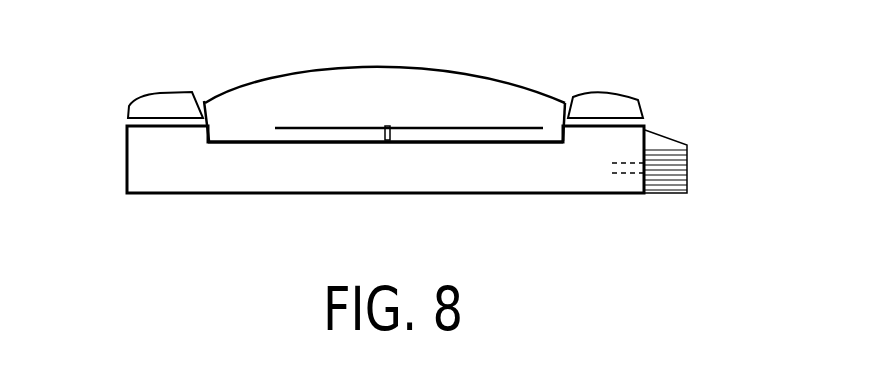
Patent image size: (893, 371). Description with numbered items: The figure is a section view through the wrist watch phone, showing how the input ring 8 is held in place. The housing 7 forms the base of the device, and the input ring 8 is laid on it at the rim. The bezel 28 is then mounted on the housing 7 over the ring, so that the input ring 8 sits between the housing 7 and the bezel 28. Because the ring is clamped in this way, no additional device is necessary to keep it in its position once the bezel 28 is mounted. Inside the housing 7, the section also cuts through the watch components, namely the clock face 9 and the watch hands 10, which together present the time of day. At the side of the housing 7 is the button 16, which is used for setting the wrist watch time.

The housing 7 is at (127, 173).
The input ring 8 is at (140, 97).
The clock face 9 is at (522, 143).
The watch hands 10 is at (422, 130).
The button 16 is at (688, 168).
The bezel 28 is at (440, 72).